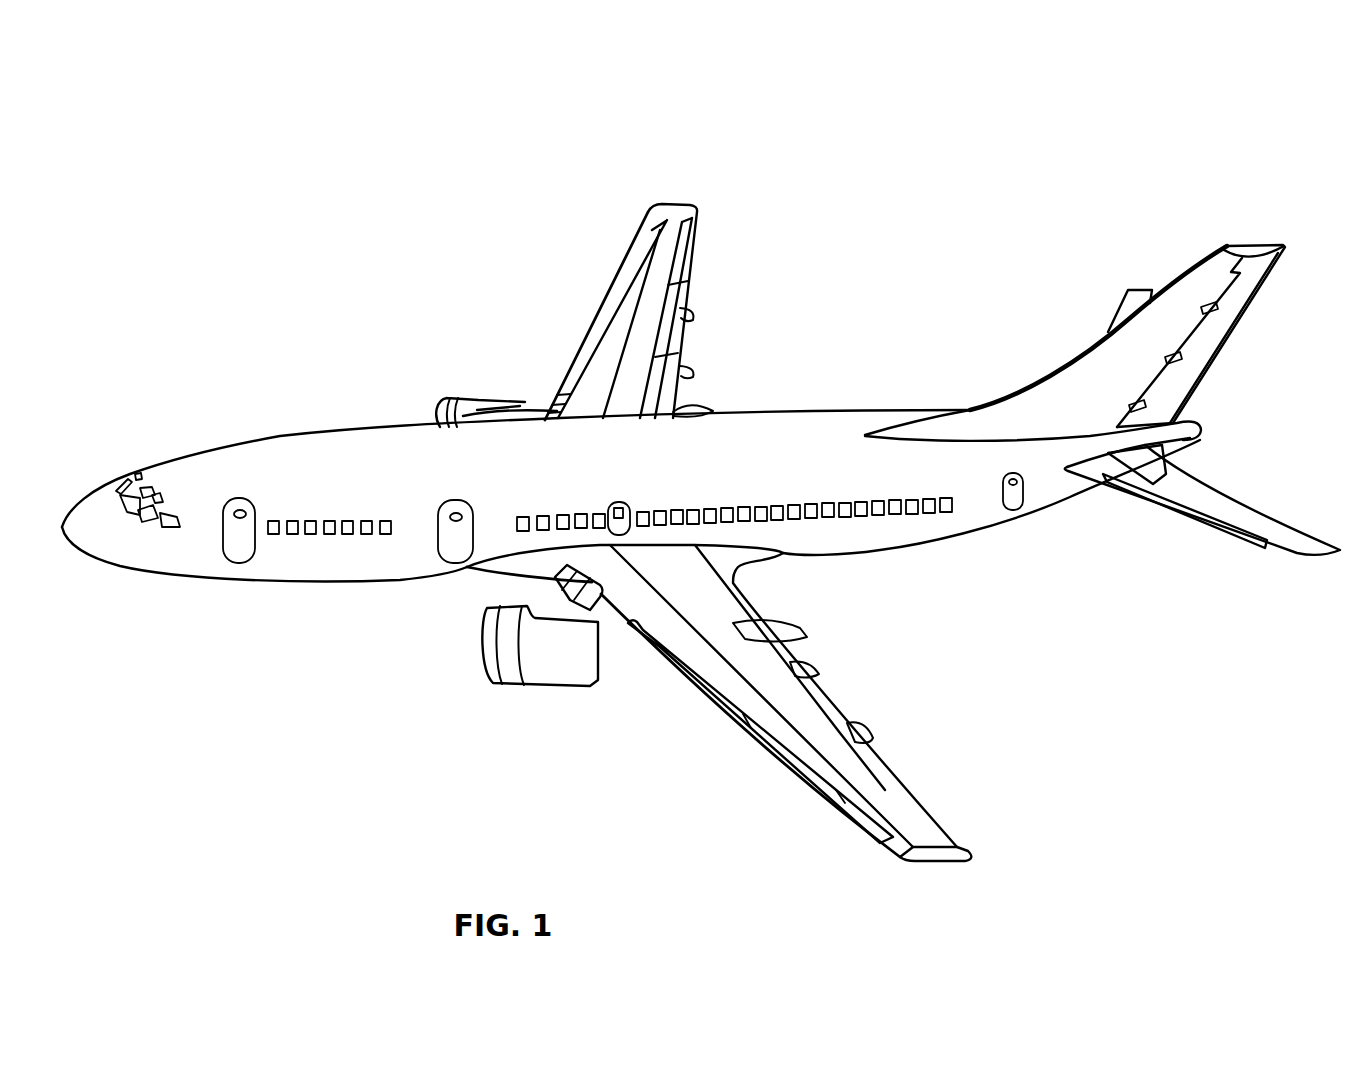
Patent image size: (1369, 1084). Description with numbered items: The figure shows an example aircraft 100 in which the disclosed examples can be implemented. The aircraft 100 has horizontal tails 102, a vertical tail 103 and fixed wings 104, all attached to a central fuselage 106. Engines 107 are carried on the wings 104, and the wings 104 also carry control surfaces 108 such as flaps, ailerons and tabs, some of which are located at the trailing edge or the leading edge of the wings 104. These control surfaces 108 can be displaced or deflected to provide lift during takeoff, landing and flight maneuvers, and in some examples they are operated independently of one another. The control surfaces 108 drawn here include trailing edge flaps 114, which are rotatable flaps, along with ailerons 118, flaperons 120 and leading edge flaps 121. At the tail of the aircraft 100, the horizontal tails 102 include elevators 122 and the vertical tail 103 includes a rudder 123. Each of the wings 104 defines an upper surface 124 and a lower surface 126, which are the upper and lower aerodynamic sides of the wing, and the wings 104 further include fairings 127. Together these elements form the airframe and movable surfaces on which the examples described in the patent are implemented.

The aircraft 100 is at (1153, 85).
The horizontal tails 102 is at (1085, 278).
The vertical tail 103 is at (1270, 205).
The wings 104 is at (692, 72).
The fuselage 106 is at (268, 448).
The engines 107 is at (455, 405).
The control surfaces 108 is at (770, 260).
The trailing edge flaps 114 is at (668, 328).
The ailerons 118 is at (693, 207).
The flaperons 120 is at (678, 347).
The leading edge flaps 121 is at (557, 393).
The elevators 122 is at (1138, 290).
The rudder 123 is at (1232, 297).
The upper surface 124 is at (635, 290).
The lower surface 126 is at (573, 358).
The fairings 127 is at (680, 372).